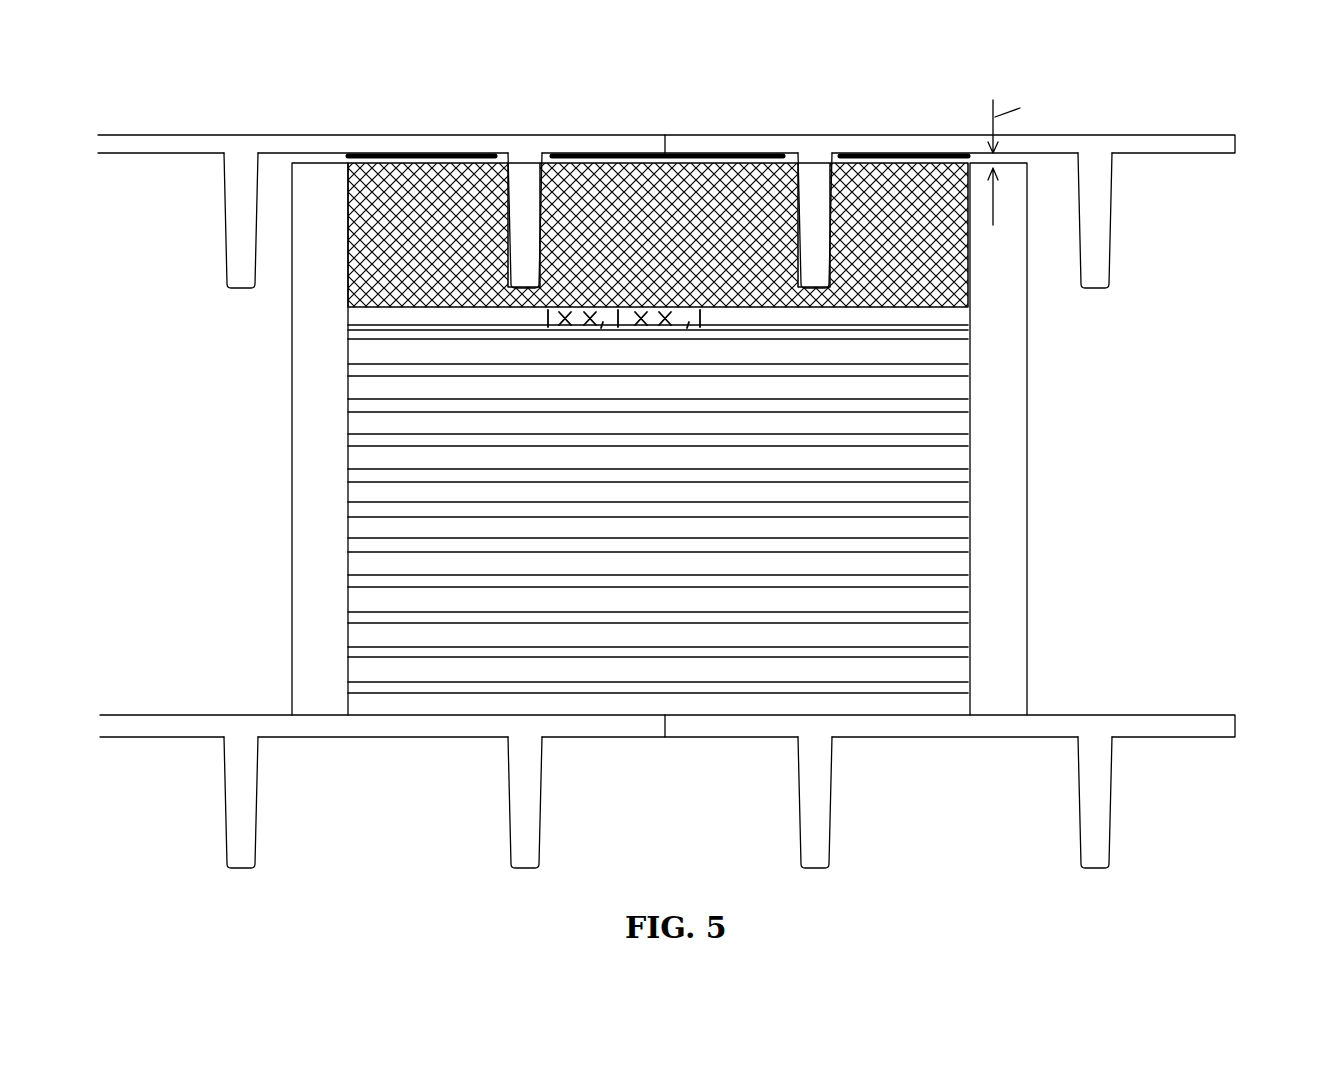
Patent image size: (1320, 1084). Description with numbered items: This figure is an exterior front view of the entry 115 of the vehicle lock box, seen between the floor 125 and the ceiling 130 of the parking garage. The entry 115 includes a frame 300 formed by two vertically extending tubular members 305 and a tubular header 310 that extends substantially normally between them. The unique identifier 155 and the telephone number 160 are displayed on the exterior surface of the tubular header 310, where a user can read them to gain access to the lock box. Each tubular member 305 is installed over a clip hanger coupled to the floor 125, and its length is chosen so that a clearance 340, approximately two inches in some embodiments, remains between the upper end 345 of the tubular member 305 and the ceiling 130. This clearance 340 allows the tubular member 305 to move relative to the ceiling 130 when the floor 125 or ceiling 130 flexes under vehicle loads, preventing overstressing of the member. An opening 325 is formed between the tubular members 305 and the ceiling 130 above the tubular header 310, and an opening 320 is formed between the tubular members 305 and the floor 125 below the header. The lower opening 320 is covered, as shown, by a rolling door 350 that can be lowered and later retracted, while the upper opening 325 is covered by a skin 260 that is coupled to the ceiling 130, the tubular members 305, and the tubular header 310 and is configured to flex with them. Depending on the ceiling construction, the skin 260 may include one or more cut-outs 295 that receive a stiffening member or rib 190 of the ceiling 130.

The entry 115 is at (1176, 490).
The floor 125 is at (1168, 715).
The ceiling 130 is at (666, 400).
The unique identifier 155 is at (687, 322).
The telephone number 160 is at (603, 322).
The stiffening member or rib 190 is at (517, 165).
The skin 260 is at (373, 205).
The cut-out 295 is at (586, 158).
The frame 300 is at (658, 382).
The tubular member 305 is at (290, 500).
The tubular header 310 is at (950, 318).
The opening 320 is at (651, 516).
The opening 325 is at (564, 193).
The clearance 340 is at (1032, 125).
The upper end 345 is at (1030, 172).
The rolling door 350 is at (945, 548).